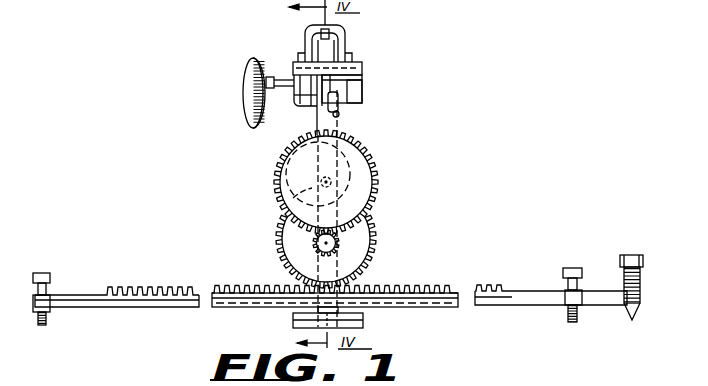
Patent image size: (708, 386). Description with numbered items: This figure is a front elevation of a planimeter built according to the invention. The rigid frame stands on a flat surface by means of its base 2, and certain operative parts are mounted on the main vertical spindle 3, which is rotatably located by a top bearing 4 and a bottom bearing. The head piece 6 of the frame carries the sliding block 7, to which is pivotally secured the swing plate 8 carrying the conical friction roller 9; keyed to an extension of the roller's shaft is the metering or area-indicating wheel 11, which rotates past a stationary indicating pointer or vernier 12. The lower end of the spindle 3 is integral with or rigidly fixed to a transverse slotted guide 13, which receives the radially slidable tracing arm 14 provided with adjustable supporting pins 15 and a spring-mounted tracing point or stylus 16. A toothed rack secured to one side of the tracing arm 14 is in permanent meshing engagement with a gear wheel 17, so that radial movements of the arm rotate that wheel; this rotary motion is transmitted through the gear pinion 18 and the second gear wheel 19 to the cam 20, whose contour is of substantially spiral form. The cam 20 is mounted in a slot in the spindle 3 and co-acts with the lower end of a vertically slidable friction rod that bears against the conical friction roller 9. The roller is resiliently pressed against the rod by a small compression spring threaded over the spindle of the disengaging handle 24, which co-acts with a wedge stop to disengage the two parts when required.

The base 2 is at (293, 323).
The main vertical spindle 3 is at (340, 120).
The top bearing 4 is at (347, 35).
The head piece 6 is at (361, 62).
The sliding block 7 is at (362, 77).
The swing plate 8 is at (362, 97).
The conical friction roller 9 is at (297, 108).
The metering wheel 11 is at (245, 112).
The indicating pointer 12 is at (279, 77).
The transverse slotted guide 13 is at (412, 307).
The tracing arm 14 is at (548, 278).
The adjustable supporting pins 15 is at (50, 275).
The tracing point 16 is at (641, 310).
The gear wheel 17 is at (364, 270).
The gear pinion 18 is at (340, 245).
The second gear wheel 19 is at (376, 192).
The cam 20 is at (281, 210).
The disengaging handle 24 is at (340, 112).